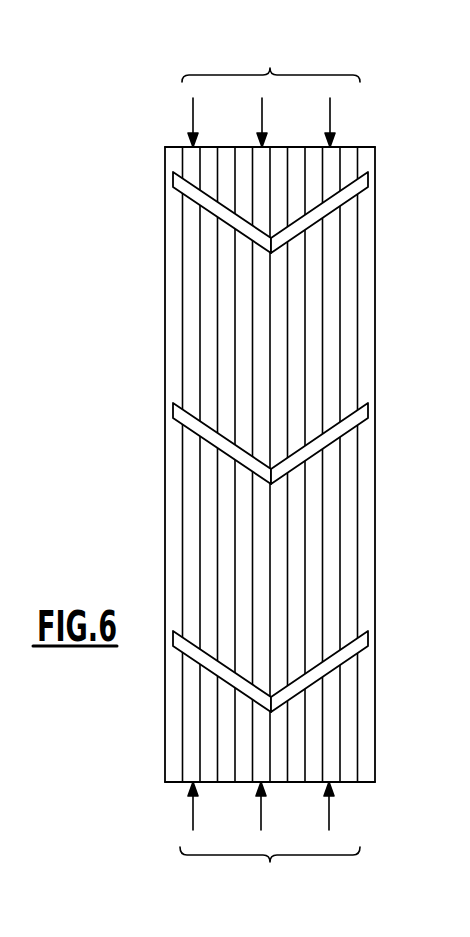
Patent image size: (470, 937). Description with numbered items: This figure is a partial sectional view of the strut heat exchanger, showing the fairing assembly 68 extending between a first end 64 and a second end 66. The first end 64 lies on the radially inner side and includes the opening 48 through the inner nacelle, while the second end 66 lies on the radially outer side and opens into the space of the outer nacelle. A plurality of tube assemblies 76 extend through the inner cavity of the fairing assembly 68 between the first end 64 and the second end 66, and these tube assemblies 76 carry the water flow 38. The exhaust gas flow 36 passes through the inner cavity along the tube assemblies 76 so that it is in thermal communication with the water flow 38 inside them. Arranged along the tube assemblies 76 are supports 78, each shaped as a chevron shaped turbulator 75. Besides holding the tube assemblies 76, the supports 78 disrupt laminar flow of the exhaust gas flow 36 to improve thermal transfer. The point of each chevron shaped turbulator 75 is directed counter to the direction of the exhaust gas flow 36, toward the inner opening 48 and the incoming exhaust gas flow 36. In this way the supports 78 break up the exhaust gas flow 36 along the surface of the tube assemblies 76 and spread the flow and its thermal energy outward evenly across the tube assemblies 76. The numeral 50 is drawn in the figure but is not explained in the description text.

The exhaust gas flow 36 is at (270, 860).
The water flow 38 is at (270, 70).
The opening 48 is at (165, 790).
The second upper end of plate 50 is at (375, 140).
The first end 64 is at (376, 790).
The second end 66 is at (165, 140).
The fairing assembly 68 is at (372, 160).
The chevron shaped turbulator 75 is at (262, 262).
The tube assemblies 76 is at (282, 603).
The supports 78 is at (356, 190).